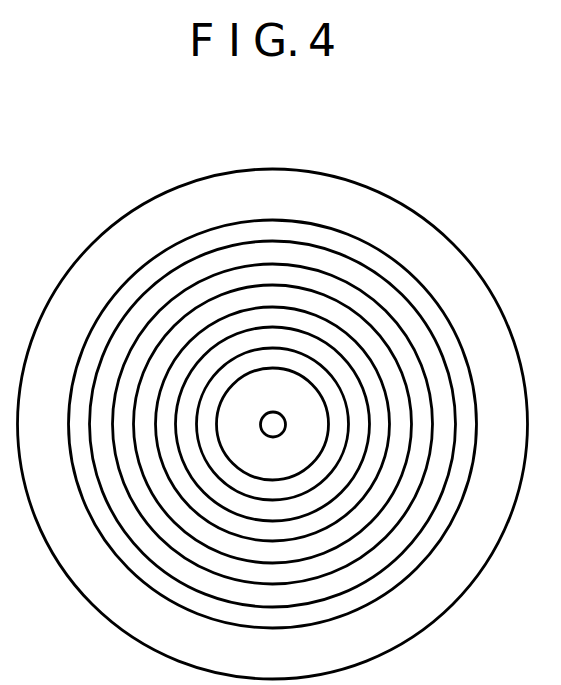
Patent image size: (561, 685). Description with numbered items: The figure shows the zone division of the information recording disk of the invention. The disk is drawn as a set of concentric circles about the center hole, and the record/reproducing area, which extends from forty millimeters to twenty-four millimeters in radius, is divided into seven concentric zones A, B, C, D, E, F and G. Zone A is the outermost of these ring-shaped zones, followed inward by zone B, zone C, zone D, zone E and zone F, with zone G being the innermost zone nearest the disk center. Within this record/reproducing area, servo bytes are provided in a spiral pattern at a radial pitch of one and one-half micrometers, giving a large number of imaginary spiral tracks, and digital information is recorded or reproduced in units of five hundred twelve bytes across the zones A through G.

The concentric zone A is at (273, 424).
The concentric zone B is at (273, 424).
The concentric zone C is at (273, 424).
The concentric zone D is at (273, 424).
The concentric zone E is at (273, 423).
The concentric zone F is at (273, 423).
The concentric zone G is at (273, 423).